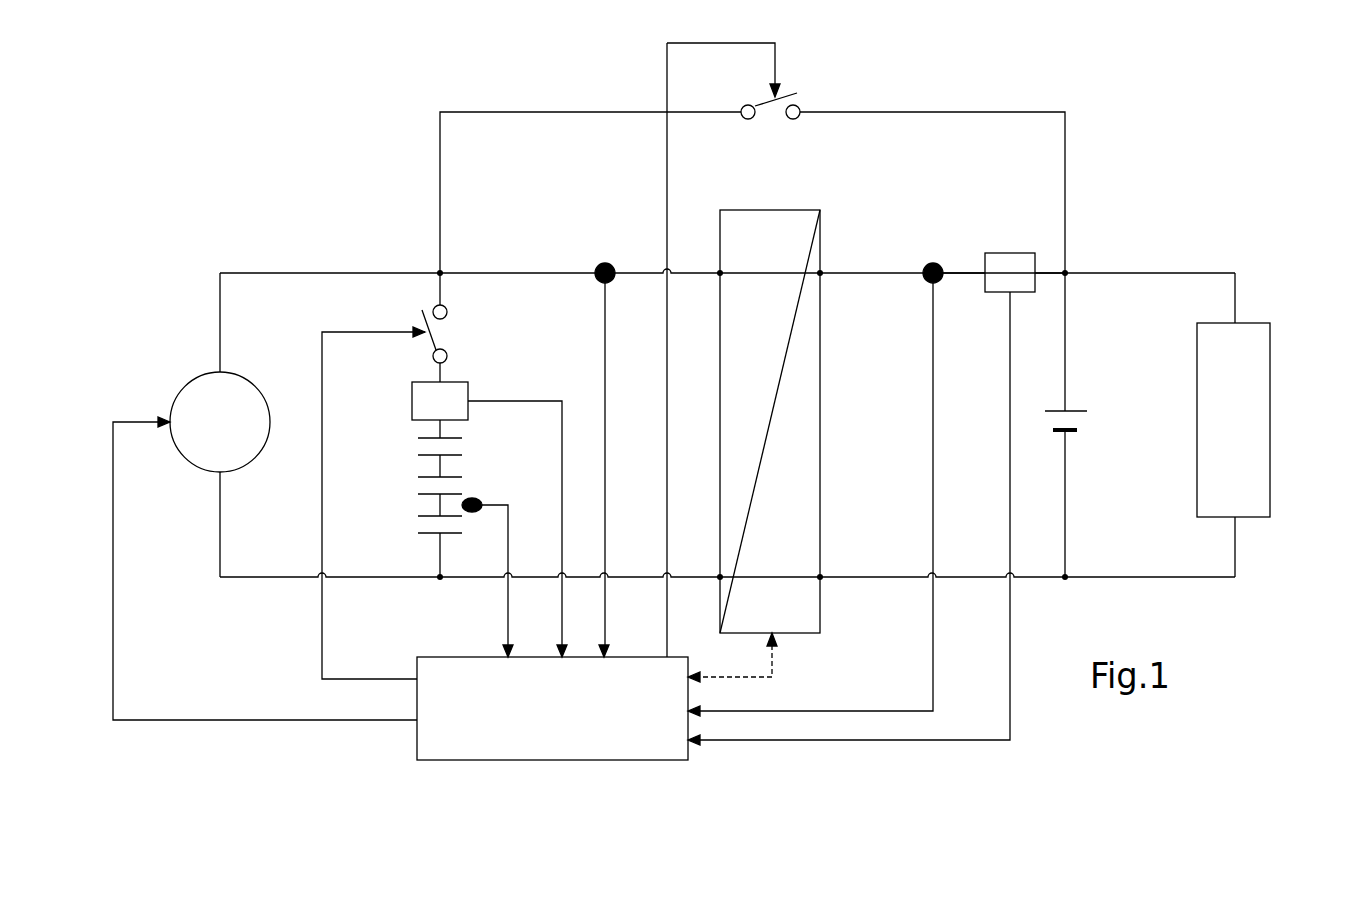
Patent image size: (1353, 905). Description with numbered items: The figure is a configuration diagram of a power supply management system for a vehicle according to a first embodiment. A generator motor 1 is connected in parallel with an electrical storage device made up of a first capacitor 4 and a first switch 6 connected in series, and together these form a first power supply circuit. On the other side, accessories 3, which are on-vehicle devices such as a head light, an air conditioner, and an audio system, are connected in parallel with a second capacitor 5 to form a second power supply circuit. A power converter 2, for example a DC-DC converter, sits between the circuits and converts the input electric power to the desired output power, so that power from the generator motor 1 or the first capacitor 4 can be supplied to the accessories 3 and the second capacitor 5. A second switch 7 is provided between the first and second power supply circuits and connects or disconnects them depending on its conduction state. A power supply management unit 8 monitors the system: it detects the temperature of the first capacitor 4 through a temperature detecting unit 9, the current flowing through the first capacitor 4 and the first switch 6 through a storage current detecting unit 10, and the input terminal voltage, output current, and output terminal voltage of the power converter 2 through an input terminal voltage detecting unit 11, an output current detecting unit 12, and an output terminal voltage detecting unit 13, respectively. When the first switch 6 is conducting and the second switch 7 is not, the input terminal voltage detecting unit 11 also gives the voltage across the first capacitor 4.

The generator motor 1 is at (220, 422).
The power converter 2 is at (822, 363).
The accessories 3 is at (1272, 420).
The first capacitor 4 is at (410, 490).
The second capacitor 5 is at (1082, 420).
The first switch 6 is at (450, 332).
The second switch 7 is at (772, 115).
The power supply management unit 8 is at (560, 760).
The temperature detecting unit 9 is at (473, 500).
The storage current detecting unit 10 is at (440, 401).
The input terminal voltage detecting unit 11 is at (608, 266).
The output current detecting unit 12 is at (1010, 272).
The output terminal voltage detecting unit 13 is at (940, 268).